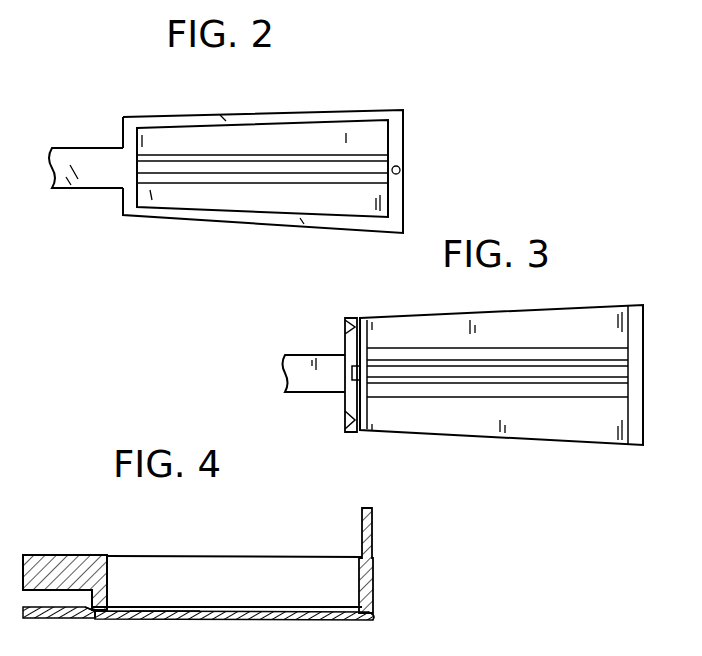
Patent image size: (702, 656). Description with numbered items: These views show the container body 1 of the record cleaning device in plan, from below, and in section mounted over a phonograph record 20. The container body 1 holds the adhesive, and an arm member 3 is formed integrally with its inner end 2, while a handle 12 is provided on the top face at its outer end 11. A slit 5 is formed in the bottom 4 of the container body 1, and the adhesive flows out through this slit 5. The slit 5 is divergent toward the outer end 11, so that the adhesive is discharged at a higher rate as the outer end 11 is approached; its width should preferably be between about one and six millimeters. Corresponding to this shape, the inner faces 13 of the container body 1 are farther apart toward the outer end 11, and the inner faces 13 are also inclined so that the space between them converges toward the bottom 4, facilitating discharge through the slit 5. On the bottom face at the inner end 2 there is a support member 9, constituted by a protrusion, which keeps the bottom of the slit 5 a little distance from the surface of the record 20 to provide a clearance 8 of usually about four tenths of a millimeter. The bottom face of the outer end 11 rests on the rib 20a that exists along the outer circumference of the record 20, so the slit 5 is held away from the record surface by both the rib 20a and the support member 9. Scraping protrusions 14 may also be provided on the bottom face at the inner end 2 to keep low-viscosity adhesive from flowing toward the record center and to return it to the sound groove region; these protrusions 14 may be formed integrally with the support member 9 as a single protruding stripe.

In FIG. 2, the container body 1 is at (218, 113).
In FIG. 3, the container body 1 is at (533, 441).
In FIG. 4, the container body 1 is at (143, 555).
In FIG. 2, the inner end of the container 2 is at (122, 202).
In FIG. 3, the inner end of the container 2 is at (345, 348).
In FIG. 2, the arm member 3 is at (87, 143).
In FIG. 3, the arm member 3 is at (310, 385).
In FIG. 4, the arm member 3 is at (53, 553).
In FIG. 2, the bottom of the container 4 is at (243, 157).
In FIG. 3, the bottom of the container 4 is at (505, 363).
In FIG. 2, the slit 5 is at (277, 167).
In FIG. 3, the slit 5 is at (570, 377).
In FIG. 4, the slit 5 is at (296, 607).
In FIG. 4, the clearance 8 is at (163, 618).
In FIG. 3, the support member 9 is at (352, 375).
In FIG. 4, the support member 9 is at (98, 618).
In FIG. 2, the outer end of the container 11 is at (403, 128).
In FIG. 3, the outer end of the container 11 is at (643, 393).
In FIG. 2, the handle 12 is at (400, 168).
In FIG. 4, the handle 12 is at (372, 528).
In FIG. 2, the inner faces of the container 13 is at (343, 120).
In FIG. 3, the inner faces of the container 13 is at (435, 325).
In FIG. 4, the inner faces of the container 13 is at (219, 568).
In FIG. 3, the scraping protrusions 14 is at (345, 325).
In FIG. 4, the phonograph record 20 is at (240, 620).
In FIG. 4, the rib 20a is at (373, 618).